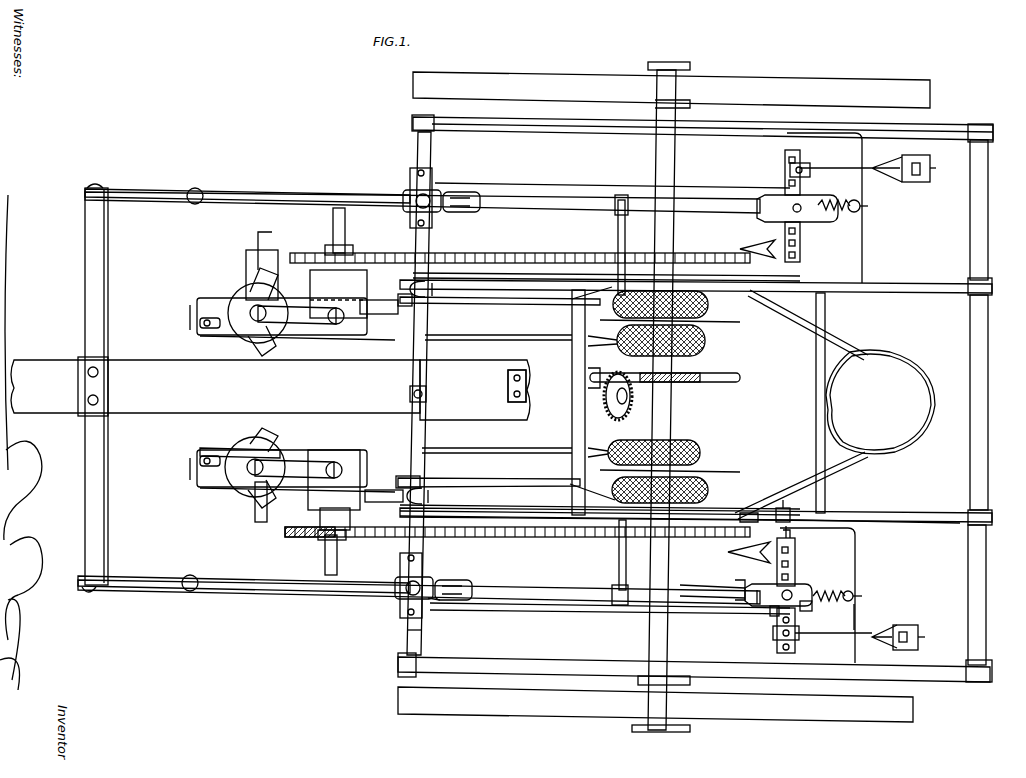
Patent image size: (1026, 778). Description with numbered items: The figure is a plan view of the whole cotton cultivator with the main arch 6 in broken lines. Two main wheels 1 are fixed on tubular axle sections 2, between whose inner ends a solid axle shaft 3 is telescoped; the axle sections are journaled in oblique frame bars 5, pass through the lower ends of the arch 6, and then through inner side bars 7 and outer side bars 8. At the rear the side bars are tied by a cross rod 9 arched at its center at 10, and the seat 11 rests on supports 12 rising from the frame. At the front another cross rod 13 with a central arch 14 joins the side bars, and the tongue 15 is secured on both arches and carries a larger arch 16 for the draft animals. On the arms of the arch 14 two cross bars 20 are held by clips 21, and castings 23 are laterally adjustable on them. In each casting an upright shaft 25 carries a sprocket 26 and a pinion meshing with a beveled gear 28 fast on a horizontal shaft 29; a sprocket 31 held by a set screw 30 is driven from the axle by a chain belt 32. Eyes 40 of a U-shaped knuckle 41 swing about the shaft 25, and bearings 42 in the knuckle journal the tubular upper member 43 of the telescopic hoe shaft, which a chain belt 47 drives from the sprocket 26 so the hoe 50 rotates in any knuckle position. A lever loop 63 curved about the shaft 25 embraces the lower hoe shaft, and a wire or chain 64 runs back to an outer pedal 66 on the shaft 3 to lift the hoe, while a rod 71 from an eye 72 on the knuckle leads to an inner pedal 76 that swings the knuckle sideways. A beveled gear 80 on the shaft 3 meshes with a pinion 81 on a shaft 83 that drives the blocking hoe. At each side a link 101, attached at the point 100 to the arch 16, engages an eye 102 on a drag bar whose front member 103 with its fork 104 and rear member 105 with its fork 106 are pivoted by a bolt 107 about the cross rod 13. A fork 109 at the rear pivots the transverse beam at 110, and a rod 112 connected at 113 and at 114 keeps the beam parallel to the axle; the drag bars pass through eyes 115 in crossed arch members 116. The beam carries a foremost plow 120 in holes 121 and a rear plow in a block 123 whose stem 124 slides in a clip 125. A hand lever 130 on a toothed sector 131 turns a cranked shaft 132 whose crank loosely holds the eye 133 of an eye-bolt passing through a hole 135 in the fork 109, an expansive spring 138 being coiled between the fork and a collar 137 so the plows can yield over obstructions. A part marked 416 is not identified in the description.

The main wheels 1 is at (412, 82).
The tubular axle sections 2 is at (678, 178).
The solid axle section or shaft 3 is at (672, 416).
The oblique frame bars 5 is at (572, 490).
The arch 6 is at (690, 422).
The inner side bars 7 is at (915, 522).
The outer side bars 8 is at (695, 672).
The cross rod 9 is at (698, 472).
The arch 10 is at (988, 447).
The seat 11 is at (880, 402).
The supports 12 is at (838, 345).
The cross rod 13 is at (405, 638).
The arch 14 is at (415, 430).
The tongue 15 is at (186, 400).
The arch 16 is at (100, 470).
The cross bars 20 is at (400, 431).
The clips 21 is at (432, 290).
The castings 23 is at (384, 336).
The upright shaft 25 is at (344, 318).
The sprocket 26 is at (336, 336).
The beveled gear 28 is at (380, 300).
The horizontal shaft 29 is at (333, 230).
The set screw 30 is at (348, 522).
The sprocket 31 is at (290, 538).
The chain belt 32 is at (505, 254).
The eyes 40 is at (334, 476).
The U-shaped bracket or knuckle 41 is at (491, 341).
The bearings 42 is at (245, 332).
The tubular upper member 43 is at (258, 290).
The chain belt 47 is at (298, 292).
The hoe 50 is at (268, 255).
The loop 63 is at (255, 520).
The flexible wire or chain 64 is at (484, 480).
The pedal 66 is at (710, 315).
The rod 71 is at (470, 449).
The bearing or eye 72 is at (200, 324).
The pedal 76 is at (708, 348).
The beveled gear 80 is at (722, 380).
The beveled pinion 81 is at (634, 396).
The shaft 83 is at (552, 396).
The point 100 is at (90, 588).
The link 101 is at (148, 576).
The eye 102 is at (195, 590).
The front member 103 is at (282, 590).
The fork 104 is at (395, 588).
The rear member 105 is at (688, 590).
The fork 106 is at (432, 582).
The bolt 107 is at (395, 602).
The fork 109 is at (757, 596).
The pivot 110 is at (795, 594).
The rod 112 is at (562, 604).
The connection 113 is at (770, 612).
The connection 114 is at (428, 600).
The eyes 115 is at (612, 590).
The arch members 116 is at (624, 556).
The foremost plow 120 is at (720, 580).
The holes 121 is at (790, 565).
The block 123 is at (908, 626).
The stem 124 is at (840, 633).
The clip 125 is at (777, 644).
The hand lever 130 is at (783, 508).
The toothed sector 131 is at (744, 513).
The cranked shaft 132 is at (880, 522).
The eye 133 is at (862, 597).
The hole 135 is at (804, 600).
The collar 137 is at (856, 608).
The expansive spring 138 is at (840, 215).
The bar 416 is at (240, 454).